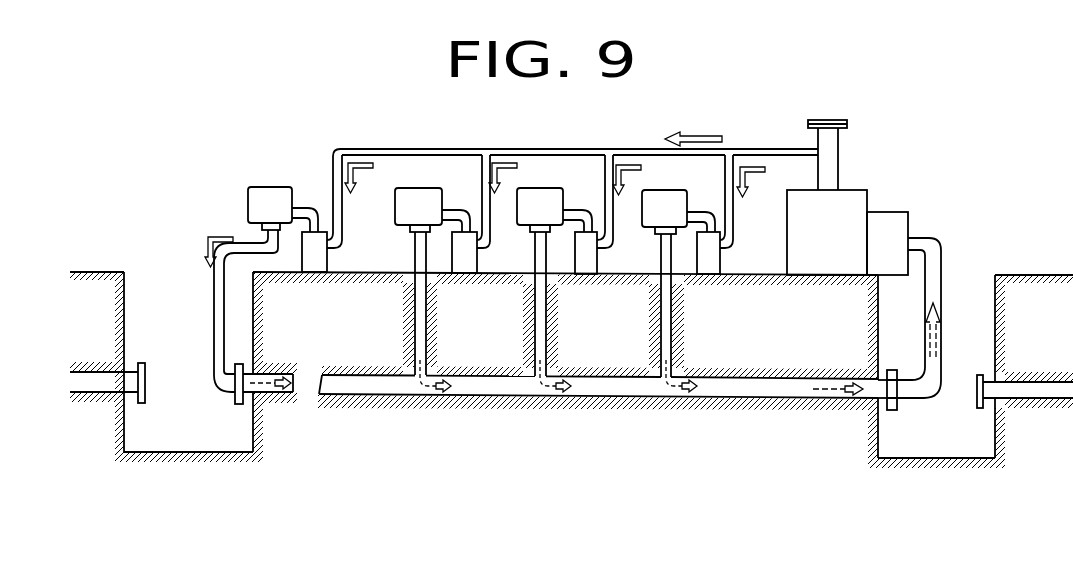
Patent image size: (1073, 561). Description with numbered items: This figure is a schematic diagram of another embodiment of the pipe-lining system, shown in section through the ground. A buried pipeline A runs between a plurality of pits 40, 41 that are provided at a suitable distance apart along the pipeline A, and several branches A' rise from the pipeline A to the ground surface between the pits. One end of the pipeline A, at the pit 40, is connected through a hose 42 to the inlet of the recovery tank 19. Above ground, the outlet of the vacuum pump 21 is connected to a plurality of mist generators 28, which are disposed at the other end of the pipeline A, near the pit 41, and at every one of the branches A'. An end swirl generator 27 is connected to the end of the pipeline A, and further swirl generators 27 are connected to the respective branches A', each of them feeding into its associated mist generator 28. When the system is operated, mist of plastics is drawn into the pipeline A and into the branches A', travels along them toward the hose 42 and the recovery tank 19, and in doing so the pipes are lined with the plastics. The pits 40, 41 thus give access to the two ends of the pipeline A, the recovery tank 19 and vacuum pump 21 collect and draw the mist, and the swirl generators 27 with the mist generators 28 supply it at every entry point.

The recovery tank 19 is at (913, 204).
The vacuum pump 21 is at (852, 200).
The end swirl generator 27 is at (281, 177).
The mist generator 28 is at (327, 247).
The pit 40 is at (989, 292).
The pit 41 is at (153, 283).
The hose 42 is at (937, 270).
The pipeline A is at (577, 403).
The branches A' is at (555, 312).